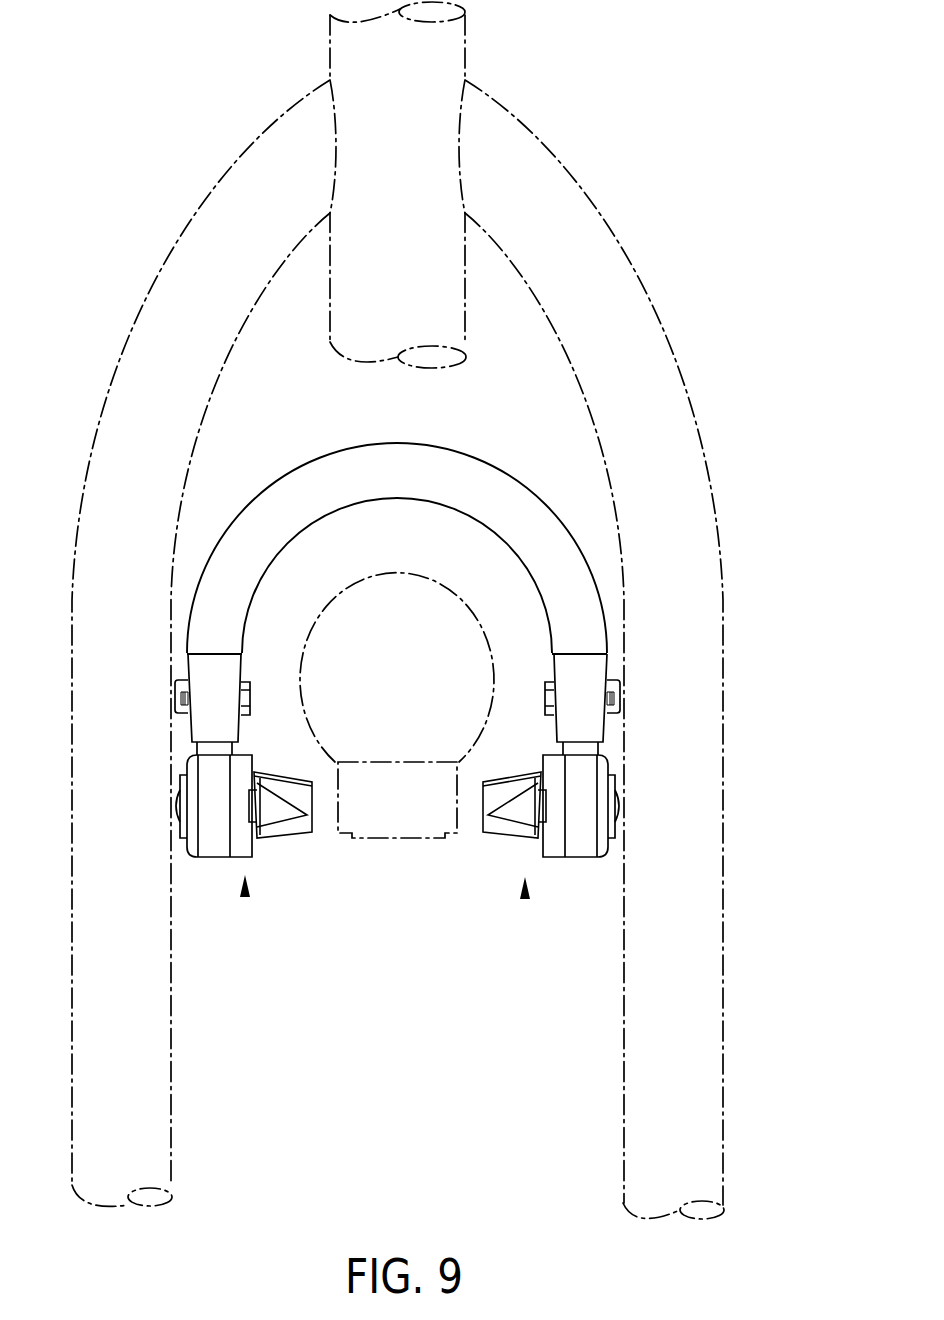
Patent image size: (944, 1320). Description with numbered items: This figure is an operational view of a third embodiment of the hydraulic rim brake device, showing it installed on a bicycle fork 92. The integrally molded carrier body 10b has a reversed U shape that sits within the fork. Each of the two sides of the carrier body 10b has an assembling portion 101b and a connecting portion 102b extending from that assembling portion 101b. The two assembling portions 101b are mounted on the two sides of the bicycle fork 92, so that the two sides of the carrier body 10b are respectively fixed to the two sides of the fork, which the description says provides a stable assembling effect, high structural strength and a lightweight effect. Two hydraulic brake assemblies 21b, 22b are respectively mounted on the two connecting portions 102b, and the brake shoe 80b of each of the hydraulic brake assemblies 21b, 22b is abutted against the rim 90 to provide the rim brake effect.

The bicycle fork 92 is at (598, 265).
The carrier body 10b is at (567, 565).
The assembling portion 101b is at (592, 702).
The connecting portion 102b is at (590, 750).
The brake shoe 80b is at (300, 822).
The rim 90 is at (415, 815).
The hydraulic brake assembly 21b is at (245, 895).
The hydraulic brake assembly 22b is at (525, 897).